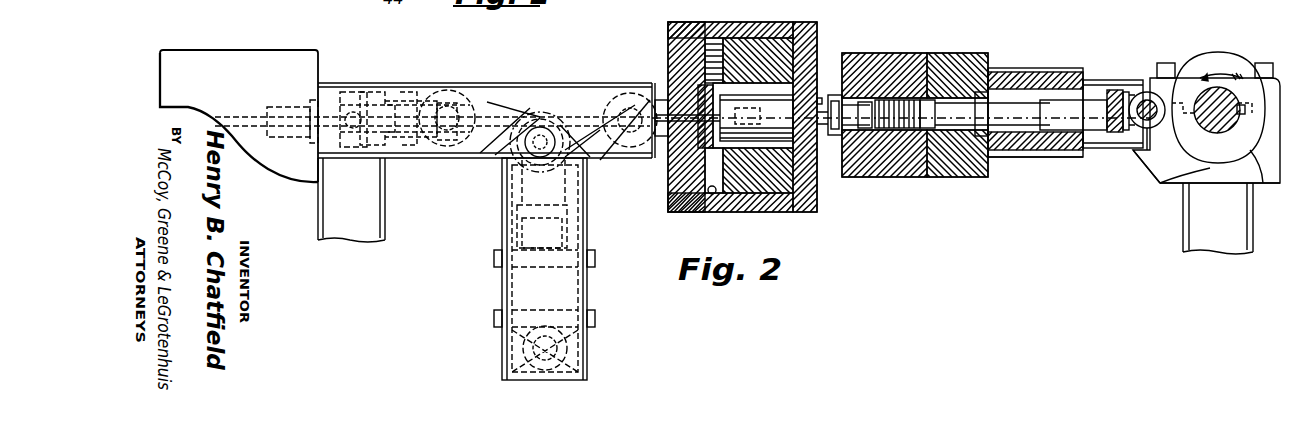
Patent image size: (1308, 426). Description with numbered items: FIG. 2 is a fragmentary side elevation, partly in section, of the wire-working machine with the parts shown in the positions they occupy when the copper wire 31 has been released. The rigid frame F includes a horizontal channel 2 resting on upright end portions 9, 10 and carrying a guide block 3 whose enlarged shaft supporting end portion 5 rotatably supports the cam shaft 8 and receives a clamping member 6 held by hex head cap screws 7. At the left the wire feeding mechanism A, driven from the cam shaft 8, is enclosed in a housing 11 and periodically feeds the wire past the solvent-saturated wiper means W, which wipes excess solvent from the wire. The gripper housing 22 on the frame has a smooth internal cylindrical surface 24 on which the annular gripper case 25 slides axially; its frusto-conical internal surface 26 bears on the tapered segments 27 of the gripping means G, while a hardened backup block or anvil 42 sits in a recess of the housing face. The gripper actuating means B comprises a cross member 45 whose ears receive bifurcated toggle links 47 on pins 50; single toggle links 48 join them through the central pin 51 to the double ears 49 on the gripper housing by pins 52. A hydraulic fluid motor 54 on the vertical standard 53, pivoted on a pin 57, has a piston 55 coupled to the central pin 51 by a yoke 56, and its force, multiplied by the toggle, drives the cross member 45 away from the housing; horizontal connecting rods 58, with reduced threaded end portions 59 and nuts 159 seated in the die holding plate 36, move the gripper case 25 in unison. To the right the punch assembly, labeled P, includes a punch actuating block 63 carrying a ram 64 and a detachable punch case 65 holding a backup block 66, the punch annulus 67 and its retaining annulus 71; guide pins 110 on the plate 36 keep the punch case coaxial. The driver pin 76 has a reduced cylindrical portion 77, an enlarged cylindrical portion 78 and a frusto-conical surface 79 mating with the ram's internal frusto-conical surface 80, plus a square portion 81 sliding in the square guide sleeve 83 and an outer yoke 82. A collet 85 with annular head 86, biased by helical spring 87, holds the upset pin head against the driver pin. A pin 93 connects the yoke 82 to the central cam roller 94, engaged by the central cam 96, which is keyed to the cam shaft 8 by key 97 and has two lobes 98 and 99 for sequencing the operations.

The wire feeding mechanism A is at (236, 46).
The housing 11 is at (280, 50).
The wiper means W is at (287, 99).
The copper wire 31 is at (230, 120).
The nuts 159 is at (357, 90).
The reduced threaded end portions 59 is at (400, 112).
The cylindrical pin 50 is at (458, 90).
The frame F is at (532, 78).
The horizontal channel 2 is at (549, 83).
The central pin 51 is at (537, 118).
The horizontal connecting rods 58 is at (600, 88).
The gripper housing 22 is at (668, 42).
The double ears 49 is at (660, 100).
The segments 27 is at (735, 98).
The punch annulus 67 is at (832, 92).
The retaining annulus 71 is at (840, 100).
The guide pins 110 is at (866, 96).
The backup block 66 is at (884, 72).
The annular head 86 is at (935, 98).
The frusto-conical surface 79 is at (980, 92).
The driver pin 76 is at (1000, 90).
The enlarged cylindrical portion 78 is at (1025, 92).
The square guide sleeve 83 is at (1062, 72).
The yoke 82 is at (1115, 88).
The cylindrical pin 93 is at (1147, 100).
The hex head cap screws 7 is at (1168, 63).
The lobe 98 is at (1185, 58).
The clamping member 6 is at (1226, 56).
The cam shaft 8 is at (1250, 106).
The upright end portion 9 is at (328, 218).
The cross member 45 is at (368, 150).
The bifurcated toggle links 47 is at (495, 165).
The piston 55 is at (497, 214).
The gripper actuating means B is at (492, 228).
The hydraulic fluid motor 54 is at (494, 318).
The yoke 56 is at (568, 197).
The backup block or anvil 42 is at (705, 190).
The cylindrical pins 52 is at (615, 150).
The single toggle links 48 is at (600, 160).
The vertical standard 53 is at (590, 236).
The cylindrical pin 57 is at (572, 352).
The internal cylindrical surface 24 is at (705, 200).
The gripper case 25 is at (745, 190).
The gripping means G is at (750, 166).
The frusto-conical internal surface 26 is at (770, 142).
The die holding plate 36 is at (818, 180).
The piston unit P is at (833, 160).
The helical spring 87 is at (884, 153).
The collet 85 is at (905, 128).
The internal frusto-conical surface 80 is at (957, 153).
The punch case 65 is at (915, 177).
The reduced cylindrical portion 77 is at (938, 177).
The ram 64 is at (948, 177).
The punch actuating block 63 is at (1043, 160).
The square portion 81 is at (1072, 132).
The guide block 3 is at (1106, 150).
The central cam roller 94 is at (1155, 128).
The central cam 96 is at (1160, 168).
The shaft supporting end portion 5 is at (1168, 186).
The axially extending key 97 is at (1222, 134).
The lobe 99 is at (1258, 168).
The upright end portion 10 is at (1195, 242).